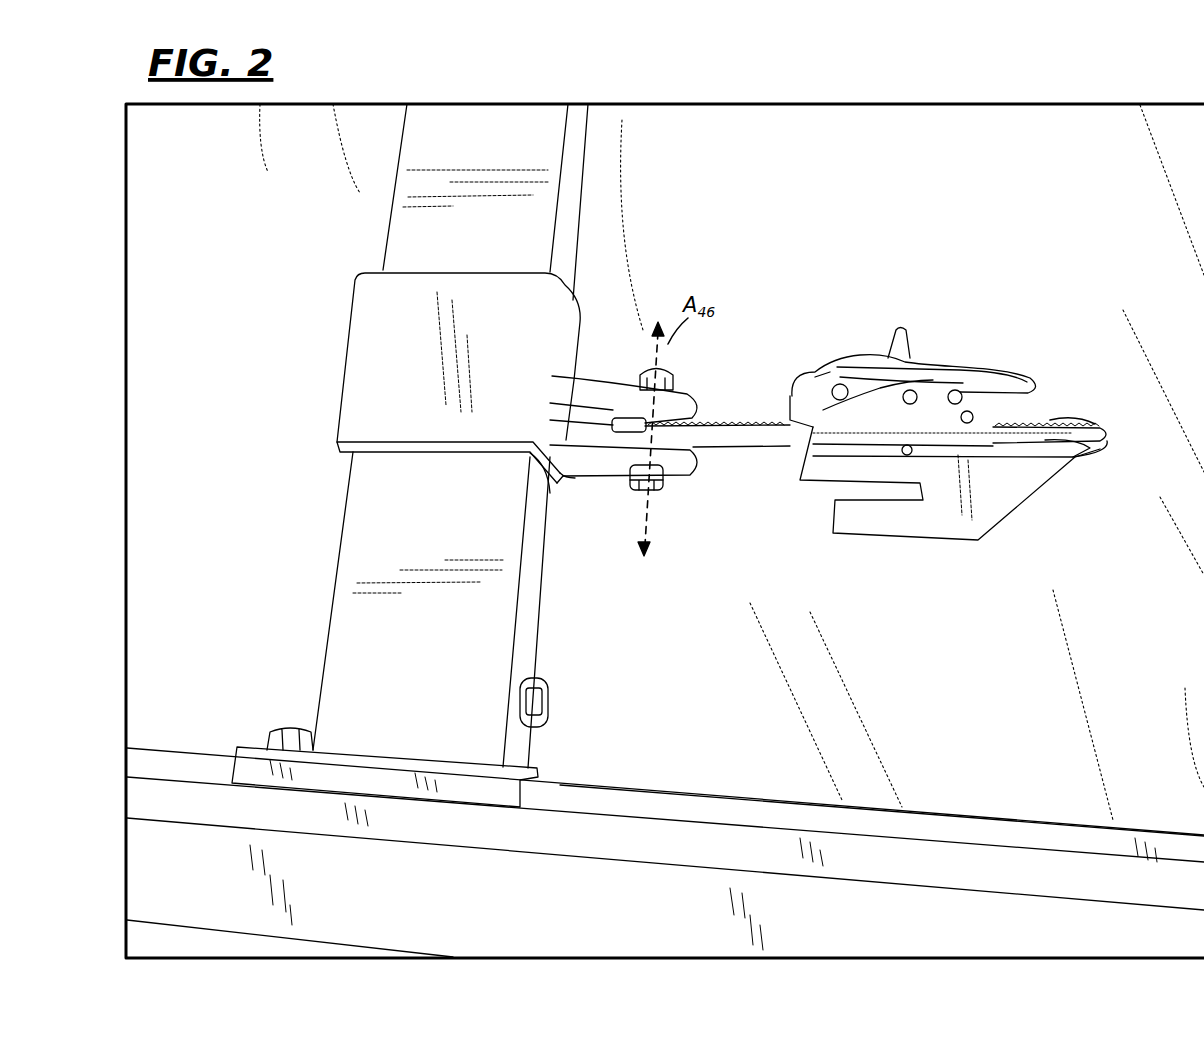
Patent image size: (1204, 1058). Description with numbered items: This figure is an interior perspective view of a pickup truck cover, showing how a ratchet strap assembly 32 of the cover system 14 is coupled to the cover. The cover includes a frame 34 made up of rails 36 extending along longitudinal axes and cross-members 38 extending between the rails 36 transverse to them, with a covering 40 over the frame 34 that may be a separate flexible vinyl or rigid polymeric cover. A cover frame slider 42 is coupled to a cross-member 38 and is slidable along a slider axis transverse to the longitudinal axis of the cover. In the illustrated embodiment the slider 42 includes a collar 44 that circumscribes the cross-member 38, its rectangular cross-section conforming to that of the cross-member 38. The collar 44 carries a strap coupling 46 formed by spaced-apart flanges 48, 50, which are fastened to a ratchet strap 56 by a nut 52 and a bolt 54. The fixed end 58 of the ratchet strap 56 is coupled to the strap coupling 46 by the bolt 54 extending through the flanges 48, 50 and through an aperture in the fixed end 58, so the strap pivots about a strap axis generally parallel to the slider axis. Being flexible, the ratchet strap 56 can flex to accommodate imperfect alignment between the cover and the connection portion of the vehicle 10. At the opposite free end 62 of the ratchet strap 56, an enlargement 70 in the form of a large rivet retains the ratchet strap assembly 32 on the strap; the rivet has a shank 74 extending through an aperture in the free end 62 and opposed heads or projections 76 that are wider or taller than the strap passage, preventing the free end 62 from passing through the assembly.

The vehicle 10 is at (1002, 182).
The cover system 14 is at (974, 272).
The ratchet strap assembly 32 is at (976, 315).
The frame 34 is at (230, 732).
The rails 36 is at (642, 790).
The cross-member 38 is at (431, 610).
The covering 40 is at (665, 826).
The cover frame slider 42 is at (338, 363).
The collar 44 is at (458, 378).
The strap coupling 46 is at (612, 480).
The flange 48 is at (598, 395).
The flange 50 is at (593, 474).
The nut 52 is at (678, 385).
The bolt 54 is at (663, 492).
The ratchet strap 56 is at (723, 455).
The fixed end 58 is at (617, 417).
The free end 62 is at (1105, 436).
The enlargement 70 is at (1075, 418).
The shank 74 is at (1070, 452).
The heads and/or projections 76 is at (1082, 418).